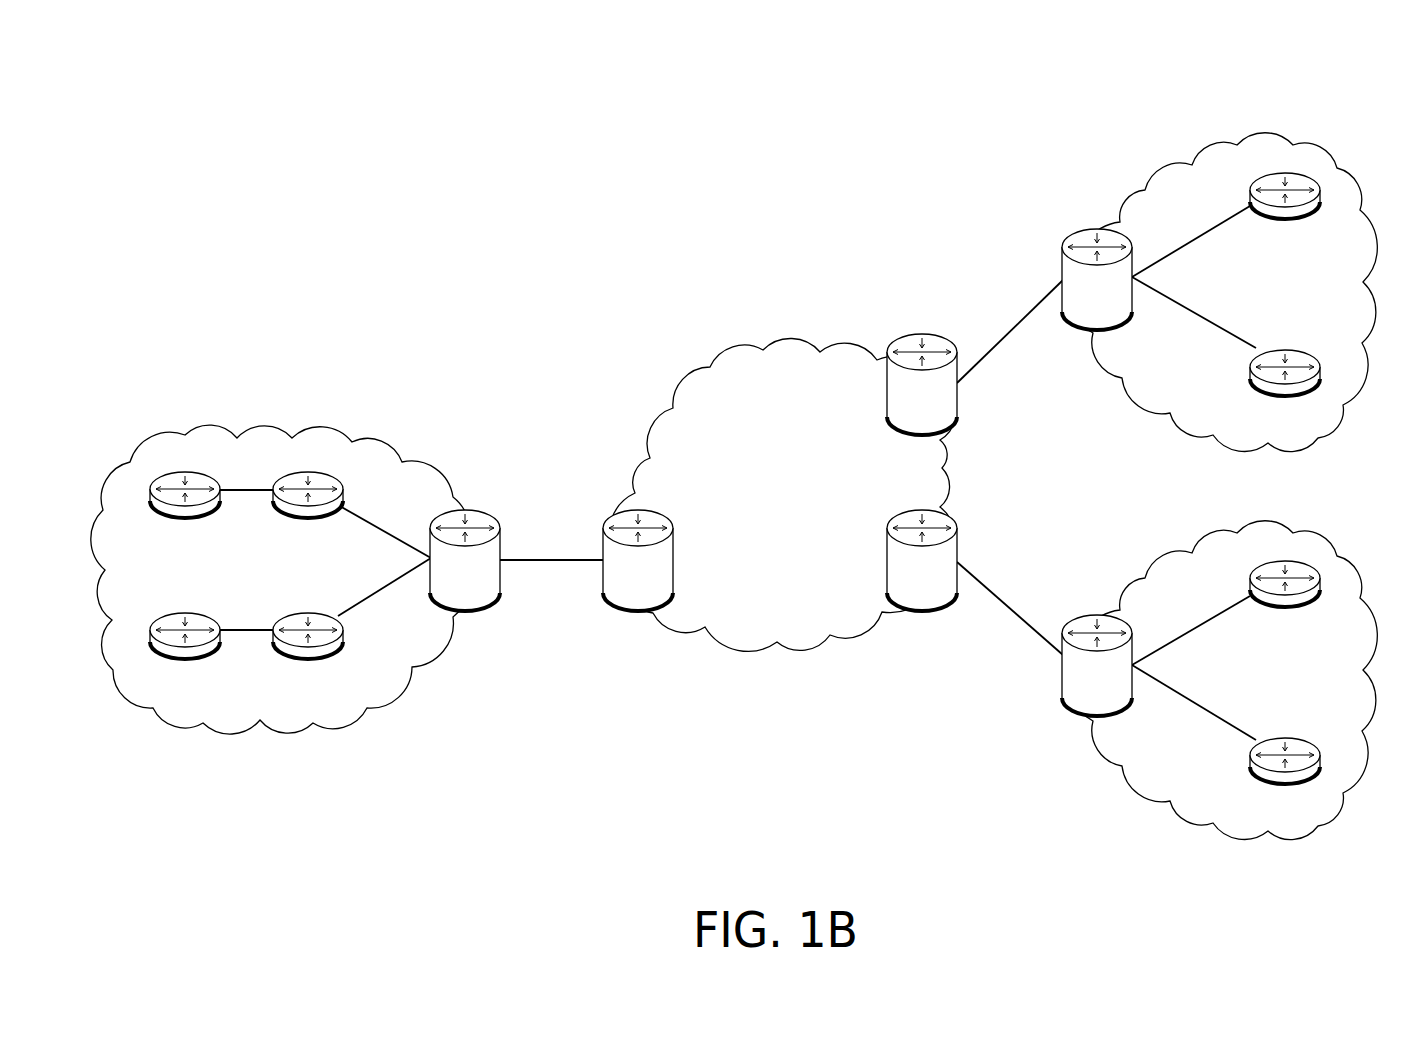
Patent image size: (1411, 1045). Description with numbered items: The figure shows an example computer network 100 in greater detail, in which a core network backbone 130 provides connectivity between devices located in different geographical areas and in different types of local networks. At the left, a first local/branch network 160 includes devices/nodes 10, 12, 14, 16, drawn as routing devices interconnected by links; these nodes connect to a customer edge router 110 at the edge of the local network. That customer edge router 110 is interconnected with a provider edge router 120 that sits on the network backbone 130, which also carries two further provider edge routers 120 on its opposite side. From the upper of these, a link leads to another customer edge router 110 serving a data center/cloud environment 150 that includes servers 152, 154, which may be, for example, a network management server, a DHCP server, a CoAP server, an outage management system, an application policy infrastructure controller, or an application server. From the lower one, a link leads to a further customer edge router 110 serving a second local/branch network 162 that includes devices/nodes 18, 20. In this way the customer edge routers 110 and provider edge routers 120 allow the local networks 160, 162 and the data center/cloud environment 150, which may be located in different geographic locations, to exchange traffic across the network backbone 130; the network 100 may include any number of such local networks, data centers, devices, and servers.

The computer network 100 is at (1324, 77).
The device/node 10 is at (185, 512).
The device/node 12 is at (308, 512).
The device/node 14 is at (185, 654).
The device/node 16 is at (308, 654).
The device/node 18 is at (1285, 778).
The device/node 20 is at (1285, 601).
The customer edge router 110 is at (450, 597).
The provider edge router 120 is at (623, 597).
The network backbone 130 is at (767, 517).
The data center/cloud environment 150 is at (1195, 141).
The server 152 is at (1285, 213).
The server 154 is at (1285, 389).
The local/branch network 160 is at (323, 417).
The local/branch network 162 is at (1115, 776).